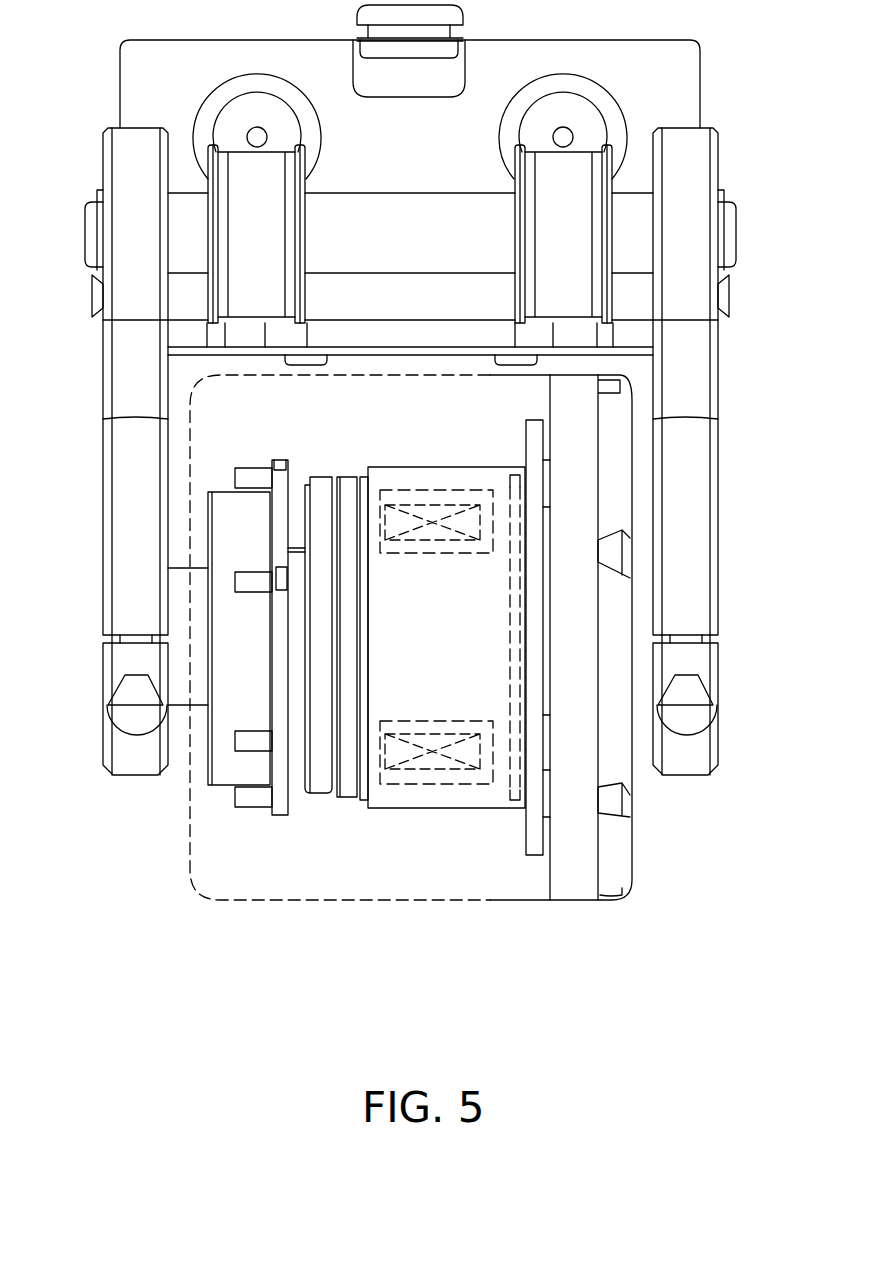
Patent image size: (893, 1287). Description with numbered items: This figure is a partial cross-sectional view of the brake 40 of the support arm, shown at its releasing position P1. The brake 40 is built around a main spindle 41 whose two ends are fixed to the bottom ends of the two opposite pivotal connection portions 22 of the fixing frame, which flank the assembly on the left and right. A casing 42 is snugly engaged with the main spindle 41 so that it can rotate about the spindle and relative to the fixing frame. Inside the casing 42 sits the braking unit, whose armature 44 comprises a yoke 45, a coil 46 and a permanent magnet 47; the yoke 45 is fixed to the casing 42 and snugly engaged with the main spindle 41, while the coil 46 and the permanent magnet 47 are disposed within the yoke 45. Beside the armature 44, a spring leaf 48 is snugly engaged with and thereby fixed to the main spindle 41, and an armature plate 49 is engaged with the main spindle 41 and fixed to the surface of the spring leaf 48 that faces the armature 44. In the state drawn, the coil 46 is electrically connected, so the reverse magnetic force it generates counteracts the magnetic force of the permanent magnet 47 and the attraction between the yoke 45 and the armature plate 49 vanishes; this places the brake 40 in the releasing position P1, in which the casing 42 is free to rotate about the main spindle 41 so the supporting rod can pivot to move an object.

The pivotal connection portion 22 is at (138, 469).
The brake 40 is at (645, 828).
The main spindle 41 is at (178, 603).
The casing 42 is at (577, 876).
The armature 44 is at (455, 728).
The yoke 45 is at (413, 800).
The coil 46 is at (445, 800).
The permanent magnet 47 is at (515, 785).
The spring leaf 48 is at (322, 787).
The armature plate 49 is at (347, 792).
The releasing position P1 is at (364, 803).